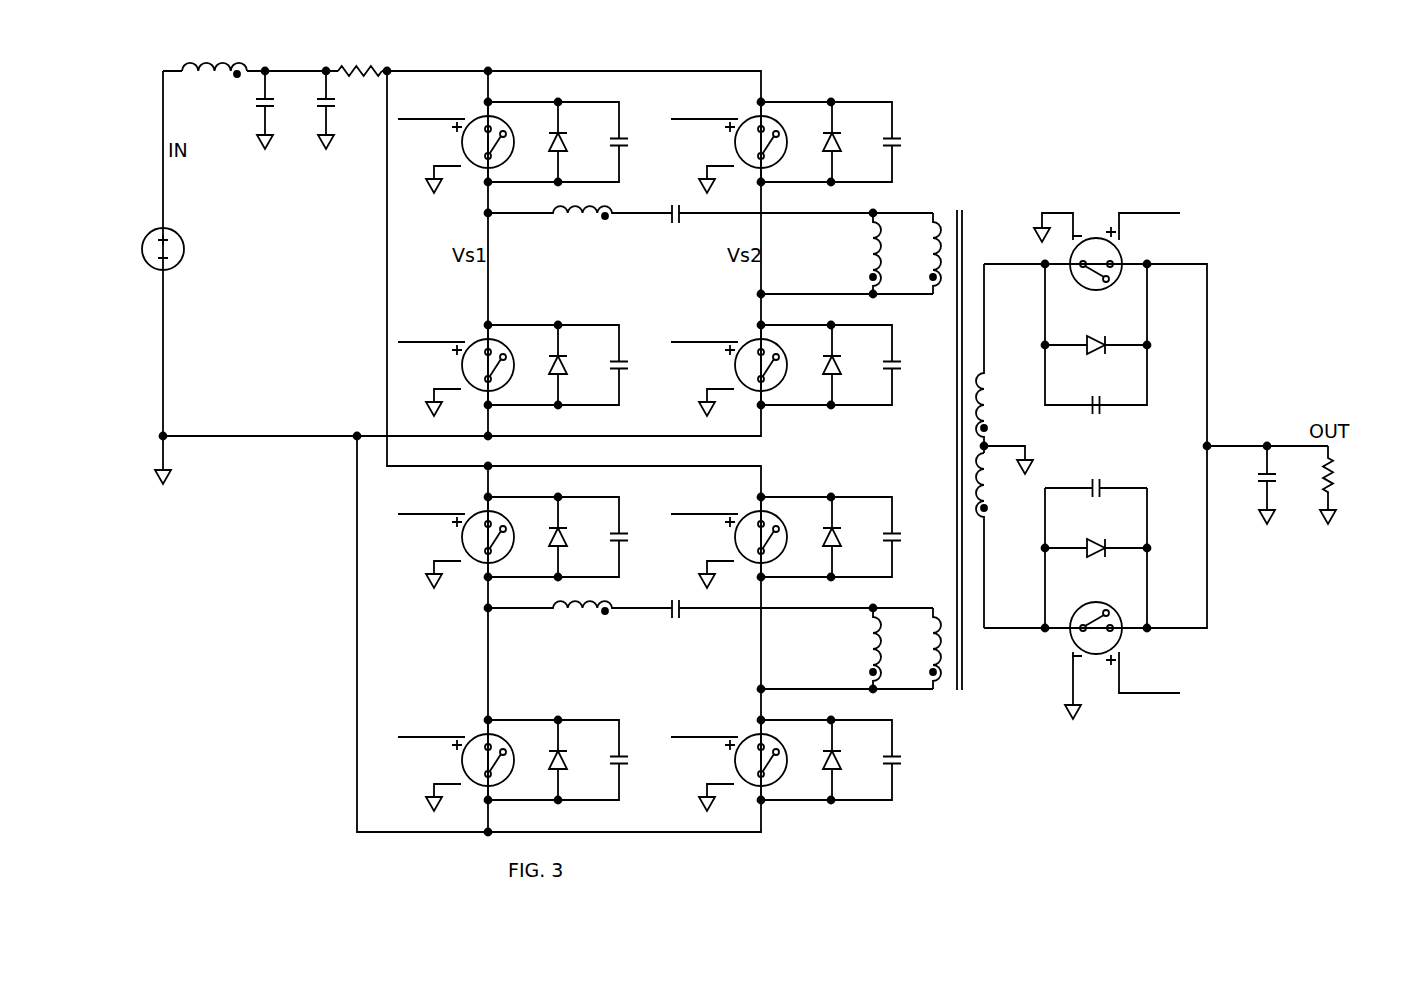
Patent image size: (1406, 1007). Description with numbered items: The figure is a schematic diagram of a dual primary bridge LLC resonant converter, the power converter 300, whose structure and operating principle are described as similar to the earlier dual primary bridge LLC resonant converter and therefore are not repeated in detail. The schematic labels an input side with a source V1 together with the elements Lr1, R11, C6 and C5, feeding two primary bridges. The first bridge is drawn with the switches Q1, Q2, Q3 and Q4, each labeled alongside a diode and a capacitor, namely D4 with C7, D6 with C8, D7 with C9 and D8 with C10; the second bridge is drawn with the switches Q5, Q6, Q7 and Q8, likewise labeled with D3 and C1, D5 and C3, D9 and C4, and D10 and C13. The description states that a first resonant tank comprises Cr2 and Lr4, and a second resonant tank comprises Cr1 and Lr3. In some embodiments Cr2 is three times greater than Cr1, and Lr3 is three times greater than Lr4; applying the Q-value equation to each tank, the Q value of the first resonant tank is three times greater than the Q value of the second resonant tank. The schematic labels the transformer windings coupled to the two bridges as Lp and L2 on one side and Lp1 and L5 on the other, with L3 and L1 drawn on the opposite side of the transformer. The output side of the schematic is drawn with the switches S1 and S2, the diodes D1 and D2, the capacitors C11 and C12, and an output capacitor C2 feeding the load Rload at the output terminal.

The power converter 300 is at (1040, 99).
The input inductor Lr1 is at (214, 76).
The input resistor R11 is at (360, 58).
The input capacitor C6 is at (280, 110).
The input capacitor C5 is at (341, 110).
The input voltage source V1 is at (176, 244).
The switch Q1 is at (474, 142).
The switch Q2 is at (474, 365).
The switch Q3 is at (747, 142).
The switch Q4 is at (747, 365).
The switch Q5 is at (474, 537).
The switch Q6 is at (474, 760).
The switch Q7 is at (747, 537).
The switch Q8 is at (747, 760).
The diode D3 is at (543, 537).
The diode D4 is at (543, 142).
The diode D5 is at (543, 760).
The diode D6 is at (543, 365).
The diode D7 is at (817, 142).
The diode D8 is at (817, 365).
The diode D9 is at (817, 537).
The diode D10 is at (820, 760).
The capacitor C1 is at (606, 537).
The capacitor C3 is at (606, 760).
The capacitor C4 is at (880, 537).
The capacitor C7 is at (606, 142).
The capacitor C8 is at (606, 365).
The capacitor C9 is at (880, 142).
The capacitor C10 is at (886, 365).
The capacitor C13 is at (886, 760).
The resonant inductor of the second resonant tank Lr3 is at (580, 613).
The resonant inductor of the first resonant tank Lr4 is at (580, 218).
The resonant capacitor of the second resonant tank Cr1 is at (797, 598).
The resonant capacitor of the first resonant tank Cr2 is at (797, 203).
The primary winding Lp is at (847, 254).
The primary winding Lp1 is at (847, 649).
The transformer winding L2 is at (929, 253).
The transformer winding L5 is at (929, 648).
The secondary winding L3 is at (994, 358).
The secondary winding L1 is at (1004, 536).
The synchronous rectifier switch S1 is at (1111, 249).
The synchronous rectifier switch S2 is at (1125, 650).
The rectifier diode D1 is at (1096, 333).
The rectifier diode D2 is at (1096, 536).
The capacitor C11 is at (1096, 393).
The capacitor C12 is at (1096, 475).
The output capacitor C2 is at (1282, 484).
The load resistor Rload is at (1357, 485).